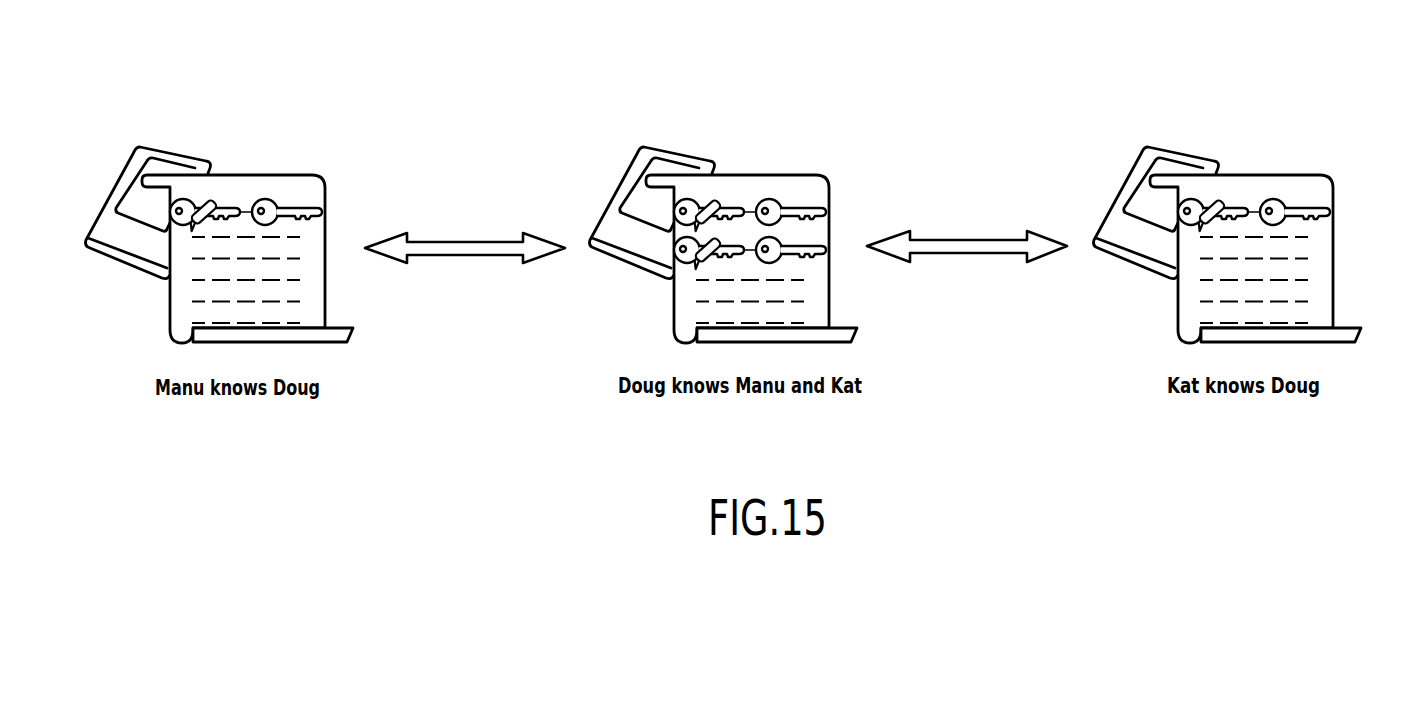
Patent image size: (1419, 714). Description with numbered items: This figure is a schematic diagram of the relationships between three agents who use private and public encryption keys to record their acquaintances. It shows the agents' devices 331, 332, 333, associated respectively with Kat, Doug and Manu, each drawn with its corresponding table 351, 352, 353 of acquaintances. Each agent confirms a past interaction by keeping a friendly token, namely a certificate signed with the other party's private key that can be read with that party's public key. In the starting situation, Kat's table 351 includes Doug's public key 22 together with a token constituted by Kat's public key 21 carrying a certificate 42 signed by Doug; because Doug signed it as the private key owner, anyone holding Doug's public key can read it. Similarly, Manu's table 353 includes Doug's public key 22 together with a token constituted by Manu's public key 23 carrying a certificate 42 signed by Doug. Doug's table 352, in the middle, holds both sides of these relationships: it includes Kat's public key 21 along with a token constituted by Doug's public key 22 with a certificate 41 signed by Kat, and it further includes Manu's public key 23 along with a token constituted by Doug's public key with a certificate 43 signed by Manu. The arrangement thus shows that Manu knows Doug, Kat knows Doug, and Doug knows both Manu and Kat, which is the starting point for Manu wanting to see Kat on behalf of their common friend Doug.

The Kat's public key 21 is at (808, 250).
The Doug's public key 22 is at (290, 212).
The Manu's public key 23 is at (185, 197).
The certificate signed by Kat 41 is at (707, 267).
The certificate signed by Doug 42 is at (210, 197).
The certificate signed by Manu 43 is at (712, 197).
The Kat's device 331 is at (1137, 198).
The Doug's device 332 is at (632, 200).
The Manu's device 333 is at (128, 200).
The Kat's table 351 is at (1313, 263).
The Doug's table 352 is at (818, 282).
The Manu's table 353 is at (305, 265).